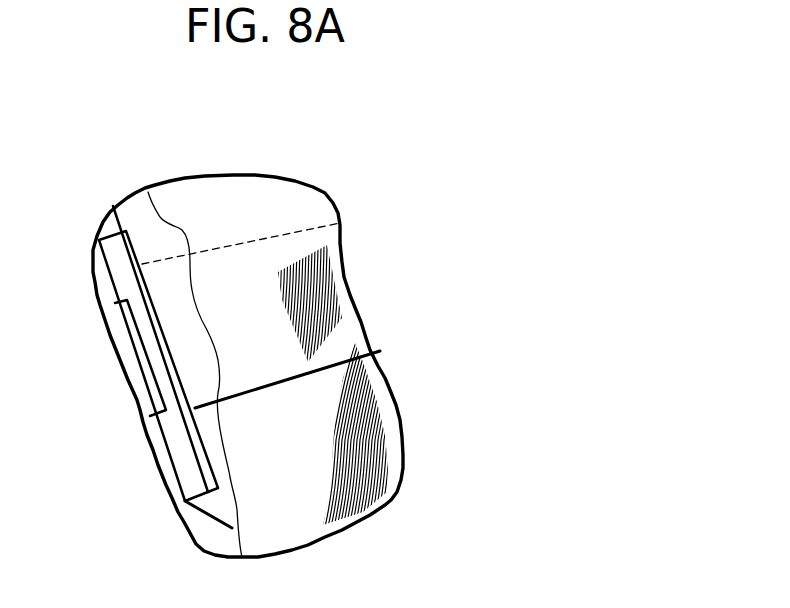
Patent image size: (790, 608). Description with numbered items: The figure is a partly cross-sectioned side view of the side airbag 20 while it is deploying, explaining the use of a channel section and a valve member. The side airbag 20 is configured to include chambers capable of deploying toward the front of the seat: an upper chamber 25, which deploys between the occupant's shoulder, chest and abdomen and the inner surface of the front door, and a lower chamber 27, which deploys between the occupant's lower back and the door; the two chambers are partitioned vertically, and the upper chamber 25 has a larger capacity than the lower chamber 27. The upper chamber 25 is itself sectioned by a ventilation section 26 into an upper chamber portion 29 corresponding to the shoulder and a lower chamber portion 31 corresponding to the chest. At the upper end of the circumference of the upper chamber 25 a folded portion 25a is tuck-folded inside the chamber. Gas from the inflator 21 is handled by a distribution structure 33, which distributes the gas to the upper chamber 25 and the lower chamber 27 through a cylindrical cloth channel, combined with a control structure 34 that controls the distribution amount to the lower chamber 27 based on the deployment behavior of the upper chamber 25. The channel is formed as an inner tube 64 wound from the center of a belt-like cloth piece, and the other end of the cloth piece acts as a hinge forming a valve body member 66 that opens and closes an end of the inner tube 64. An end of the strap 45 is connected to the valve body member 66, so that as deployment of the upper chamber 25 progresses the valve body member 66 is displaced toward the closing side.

The side airbag 20 is at (263, 179).
The inflator 21 is at (133, 367).
The upper chamber 25 is at (415, 172).
The folded portion 25a is at (158, 187).
The ventilation section 26 is at (306, 230).
The lower chamber 27 is at (395, 390).
The chamber portion 29 is at (325, 213).
The chamber portion 31 is at (352, 283).
The distribution structure 33 is at (160, 449).
The control structure 34 is at (193, 518).
The strap 45 is at (196, 462).
The inner tube 64 is at (178, 372).
The valve body member 66 is at (222, 515).